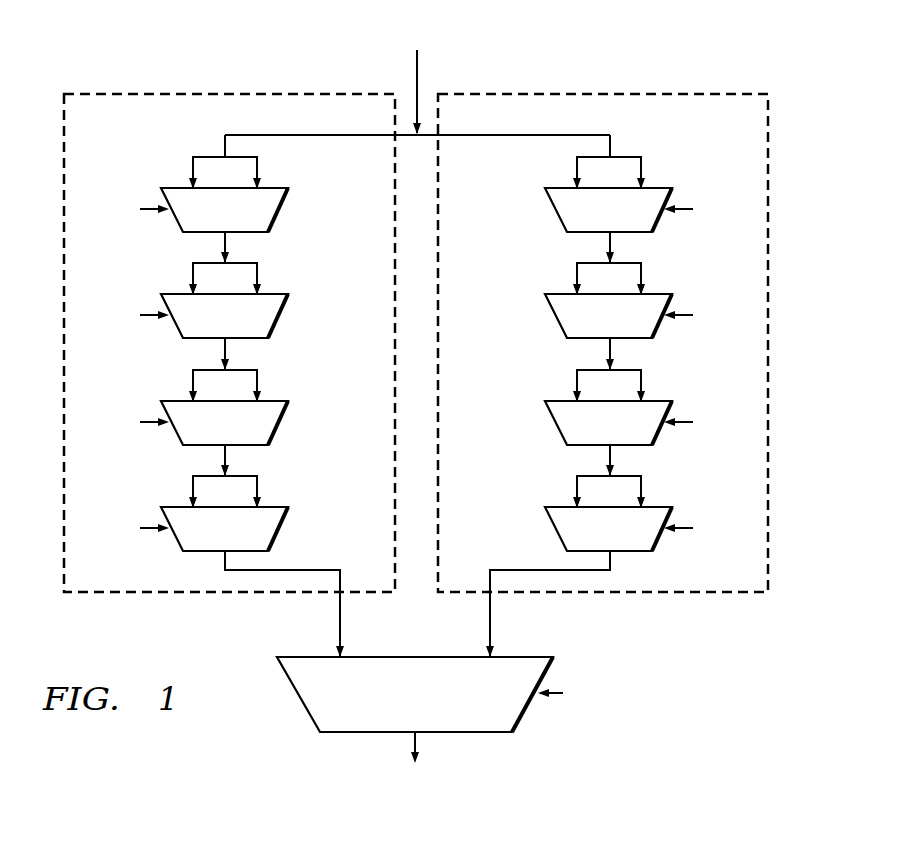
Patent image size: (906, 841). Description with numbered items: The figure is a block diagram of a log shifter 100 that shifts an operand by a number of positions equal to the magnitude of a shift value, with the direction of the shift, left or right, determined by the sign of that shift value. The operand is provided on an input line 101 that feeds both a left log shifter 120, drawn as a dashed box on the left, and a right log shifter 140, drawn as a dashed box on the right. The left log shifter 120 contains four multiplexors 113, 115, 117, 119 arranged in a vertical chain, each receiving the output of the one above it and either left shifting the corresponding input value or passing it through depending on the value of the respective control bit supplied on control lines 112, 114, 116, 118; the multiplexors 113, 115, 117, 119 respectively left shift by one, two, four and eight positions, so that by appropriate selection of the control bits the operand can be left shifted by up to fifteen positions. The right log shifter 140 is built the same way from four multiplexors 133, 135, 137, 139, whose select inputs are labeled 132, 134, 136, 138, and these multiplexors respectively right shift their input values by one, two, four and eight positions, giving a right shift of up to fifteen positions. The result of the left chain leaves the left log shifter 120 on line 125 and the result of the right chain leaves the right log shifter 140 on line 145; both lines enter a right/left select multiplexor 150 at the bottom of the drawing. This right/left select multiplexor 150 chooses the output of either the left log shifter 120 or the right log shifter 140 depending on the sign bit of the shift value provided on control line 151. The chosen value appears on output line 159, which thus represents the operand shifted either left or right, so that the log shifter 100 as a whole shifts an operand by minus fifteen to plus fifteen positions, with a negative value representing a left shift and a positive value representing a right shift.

The log shifter 100 is at (256, 65).
The operand input line 101 is at (419, 72).
The control line 112 is at (152, 210).
The multiplexor 113 is at (284, 210).
The control line 114 is at (152, 316).
The multiplexor 115 is at (284, 316).
The control line 116 is at (152, 423).
The multiplexor 117 is at (284, 423).
The control line 118 is at (152, 529).
The multiplexor 119 is at (284, 529).
The left log shifter 120 is at (187, 592).
The left log shifter output 125 is at (338, 614).
The control bit 132 is at (683, 210).
The multiplexor 133 is at (556, 210).
The control bit 134 is at (683, 316).
The multiplexor 135 is at (556, 316).
The control bit 136 is at (683, 423).
The multiplexor 137 is at (556, 423).
The control bit 138 is at (683, 529).
The multiplexor 139 is at (556, 529).
The right log shifter 140 is at (640, 592).
The right log shifter output 145 is at (492, 614).
The right/left select multiplexor 150 is at (297, 693).
The control line 151 is at (565, 695).
The output line 159 is at (410, 737).